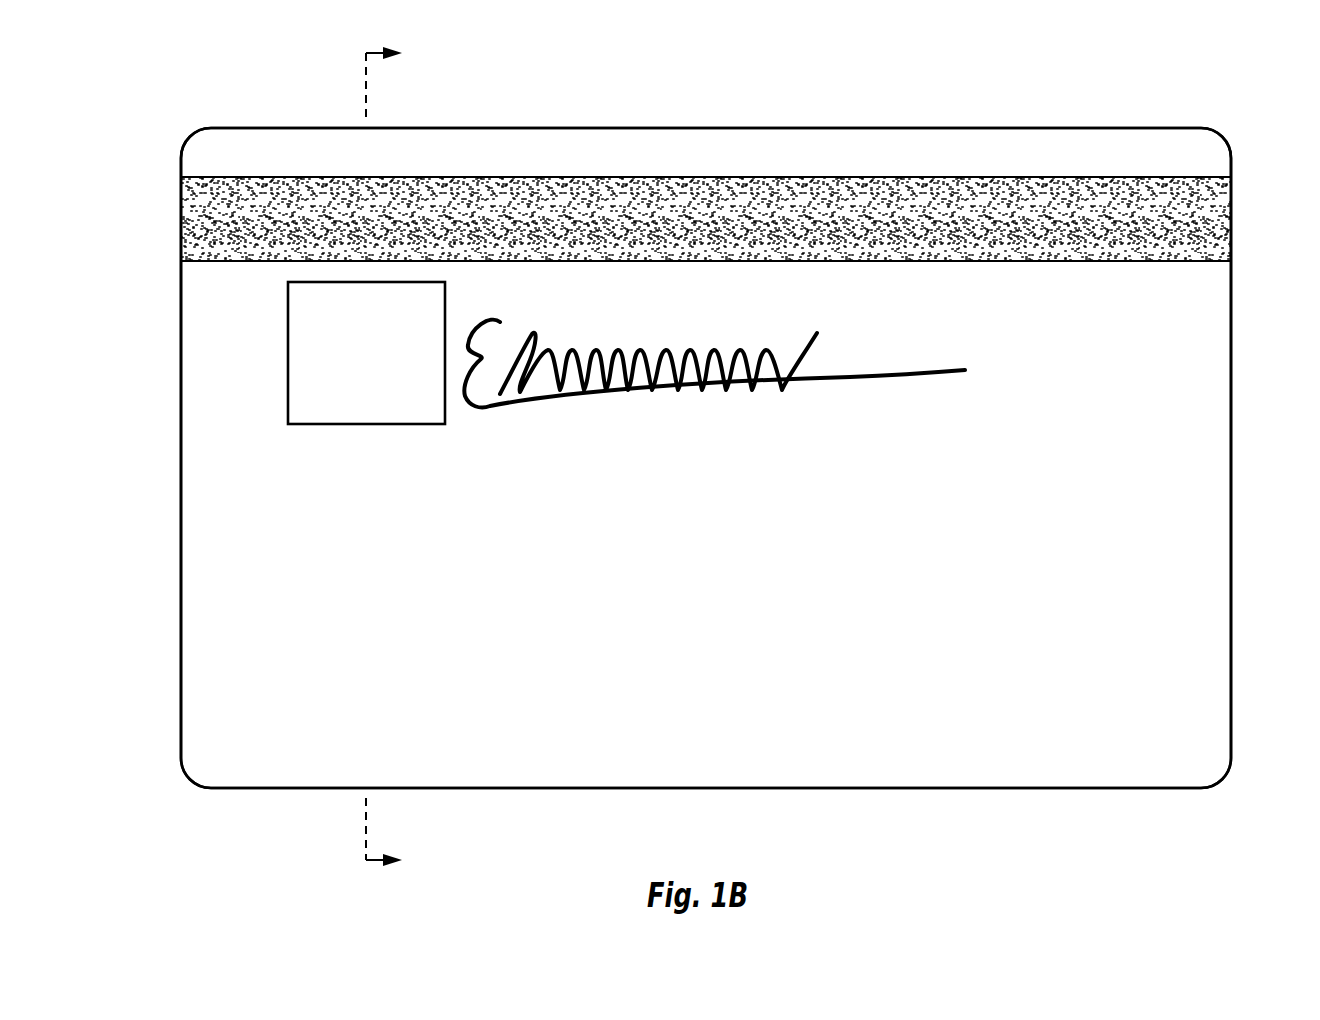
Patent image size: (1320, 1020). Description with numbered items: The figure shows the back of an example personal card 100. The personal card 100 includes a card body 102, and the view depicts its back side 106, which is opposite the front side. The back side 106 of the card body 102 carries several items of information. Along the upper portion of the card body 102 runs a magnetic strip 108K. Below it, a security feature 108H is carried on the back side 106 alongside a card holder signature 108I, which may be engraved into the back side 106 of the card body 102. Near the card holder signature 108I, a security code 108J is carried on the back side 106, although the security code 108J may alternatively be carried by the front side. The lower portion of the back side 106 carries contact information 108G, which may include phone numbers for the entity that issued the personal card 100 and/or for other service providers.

The personal card 100 is at (161, 87).
The card body 102 is at (1232, 150).
The back side 106 is at (1206, 628).
The contact information 108G is at (287, 598).
The security feature 108H is at (292, 369).
The card holder signature 108I is at (821, 347).
The security code 108J is at (1140, 323).
The magnetic strip 108K is at (1221, 222).